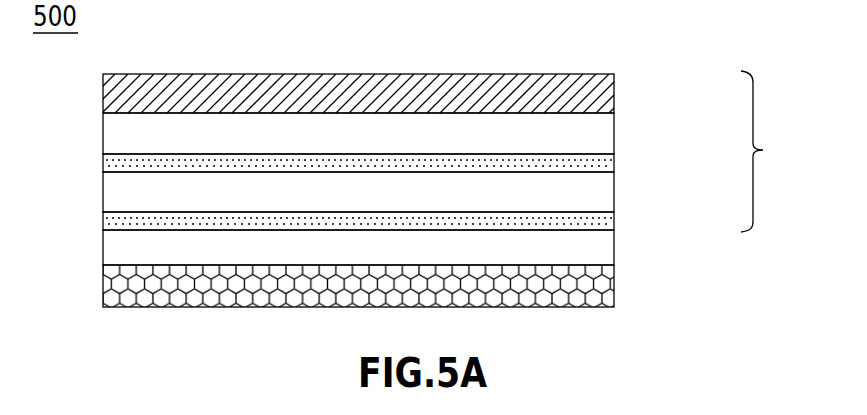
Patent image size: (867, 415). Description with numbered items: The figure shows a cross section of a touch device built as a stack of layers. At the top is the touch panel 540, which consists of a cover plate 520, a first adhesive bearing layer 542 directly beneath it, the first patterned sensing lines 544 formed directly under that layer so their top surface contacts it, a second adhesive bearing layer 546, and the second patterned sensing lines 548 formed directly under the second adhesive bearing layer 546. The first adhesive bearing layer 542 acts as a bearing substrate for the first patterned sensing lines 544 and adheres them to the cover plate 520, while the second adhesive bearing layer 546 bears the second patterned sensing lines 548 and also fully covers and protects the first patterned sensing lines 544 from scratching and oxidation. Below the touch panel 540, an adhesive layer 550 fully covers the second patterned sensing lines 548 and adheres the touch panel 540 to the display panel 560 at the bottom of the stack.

The cover plate 520 is at (615, 88).
The touch panel 540 is at (778, 151).
The first adhesive bearing layer 542 is at (597, 135).
The first patterned sensing lines 544 is at (597, 167).
The second adhesive bearing layer 546 is at (597, 193).
The second patterned sensing lines 548 is at (597, 222).
The adhesive layer 550 is at (597, 252).
The display panel 560 is at (615, 292).